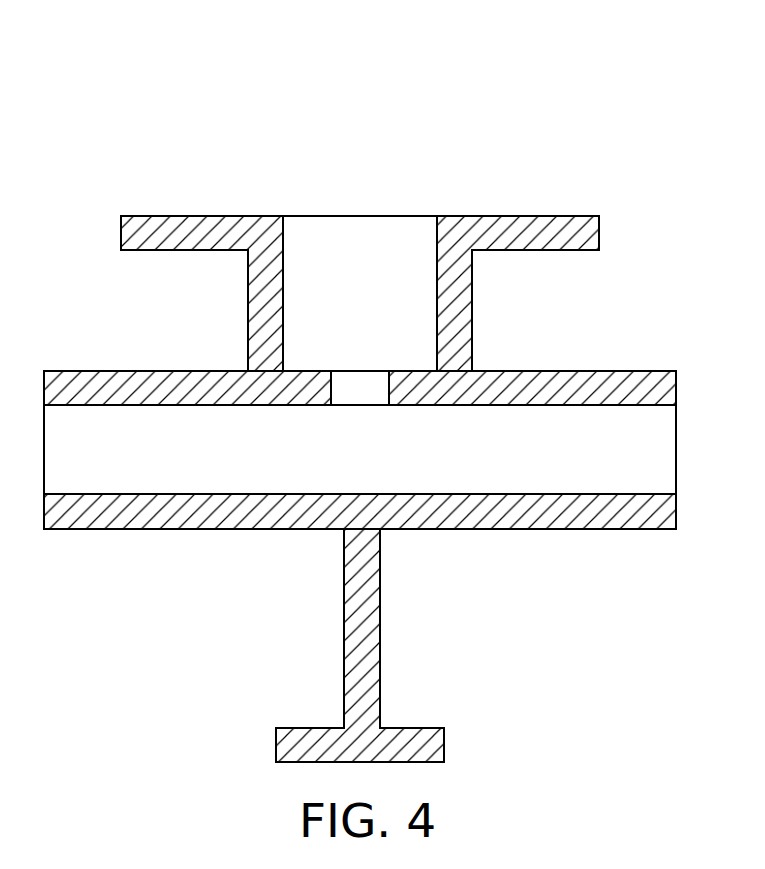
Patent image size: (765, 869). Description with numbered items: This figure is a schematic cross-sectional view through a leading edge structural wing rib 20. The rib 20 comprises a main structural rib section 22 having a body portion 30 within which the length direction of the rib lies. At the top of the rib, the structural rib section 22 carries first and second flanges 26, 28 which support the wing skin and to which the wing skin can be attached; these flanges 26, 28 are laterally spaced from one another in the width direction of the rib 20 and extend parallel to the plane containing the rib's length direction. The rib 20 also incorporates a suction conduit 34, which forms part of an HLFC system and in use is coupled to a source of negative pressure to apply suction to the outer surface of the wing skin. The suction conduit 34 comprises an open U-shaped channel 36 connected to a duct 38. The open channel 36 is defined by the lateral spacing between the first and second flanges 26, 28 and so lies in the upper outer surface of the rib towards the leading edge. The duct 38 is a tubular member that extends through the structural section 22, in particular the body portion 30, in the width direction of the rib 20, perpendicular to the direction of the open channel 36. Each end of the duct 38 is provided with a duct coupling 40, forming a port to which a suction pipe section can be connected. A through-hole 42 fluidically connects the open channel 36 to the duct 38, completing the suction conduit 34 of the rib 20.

The leading edge structural wing rib 20 is at (496, 92).
The main structural rib section 22 is at (395, 649).
The first flange 26 is at (172, 216).
The second flange 28 is at (567, 216).
The body portion 30 is at (344, 645).
The suction conduit 34 is at (388, 435).
The open U-shaped channel 36 is at (360, 258).
The duct 38 is at (99, 371).
The duct coupling 40 is at (640, 371).
The through-hole 42 is at (360, 382).